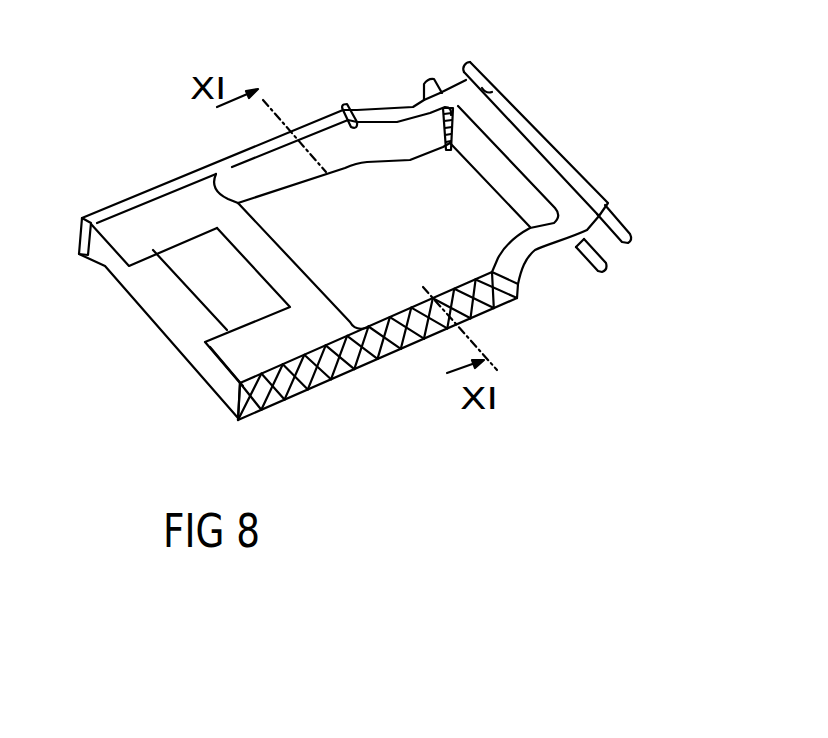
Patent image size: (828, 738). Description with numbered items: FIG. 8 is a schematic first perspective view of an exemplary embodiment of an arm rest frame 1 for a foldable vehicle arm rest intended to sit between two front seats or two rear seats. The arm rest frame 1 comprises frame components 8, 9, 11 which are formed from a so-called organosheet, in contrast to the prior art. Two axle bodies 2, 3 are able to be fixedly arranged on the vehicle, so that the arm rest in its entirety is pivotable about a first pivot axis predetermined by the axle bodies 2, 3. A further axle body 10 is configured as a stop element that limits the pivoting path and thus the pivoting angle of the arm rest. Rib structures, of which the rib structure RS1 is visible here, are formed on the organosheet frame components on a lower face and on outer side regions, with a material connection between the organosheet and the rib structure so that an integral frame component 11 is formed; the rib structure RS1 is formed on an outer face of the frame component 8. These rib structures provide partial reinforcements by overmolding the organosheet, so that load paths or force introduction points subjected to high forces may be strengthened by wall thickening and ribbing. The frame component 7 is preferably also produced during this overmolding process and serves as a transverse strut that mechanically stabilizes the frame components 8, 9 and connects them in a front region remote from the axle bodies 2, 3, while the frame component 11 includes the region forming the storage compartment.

The arm rest frame 1 is at (130, 123).
The axle body 2 is at (607, 268).
The axle body 3 is at (426, 82).
The frame component 7 is at (157, 300).
The frame component 8 is at (350, 124).
The frame component 9 is at (520, 293).
The axle body 10 is at (623, 221).
The frame component 11 is at (440, 174).
The rib structure RS1 is at (320, 377).